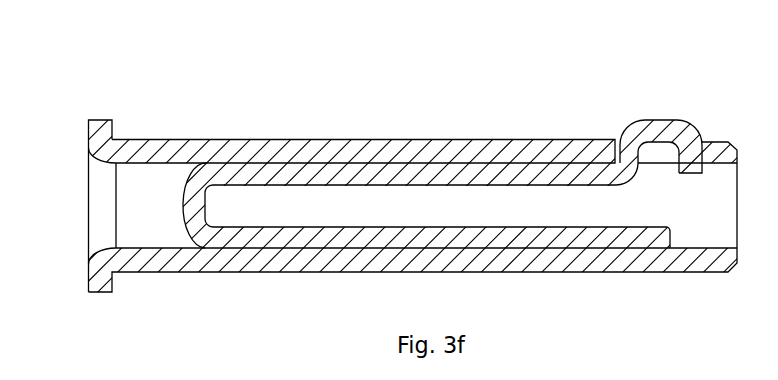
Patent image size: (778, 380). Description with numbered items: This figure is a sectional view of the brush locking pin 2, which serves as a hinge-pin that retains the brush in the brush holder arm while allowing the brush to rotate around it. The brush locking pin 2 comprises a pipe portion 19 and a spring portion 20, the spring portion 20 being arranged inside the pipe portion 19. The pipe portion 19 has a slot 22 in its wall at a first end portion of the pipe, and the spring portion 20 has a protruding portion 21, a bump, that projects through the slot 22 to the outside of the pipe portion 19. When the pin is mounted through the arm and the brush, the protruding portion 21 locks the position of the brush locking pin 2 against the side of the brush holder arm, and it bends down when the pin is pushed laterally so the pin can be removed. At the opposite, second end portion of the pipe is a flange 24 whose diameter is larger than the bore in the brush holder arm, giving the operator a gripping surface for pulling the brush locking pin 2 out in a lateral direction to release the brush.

The brush locking pin 2 is at (526, 101).
The pipe portion 19 is at (365, 137).
The spring portion 20 is at (180, 207).
The protruding portion 21 is at (668, 117).
The slot 22 is at (659, 164).
The flange 24 is at (108, 118).